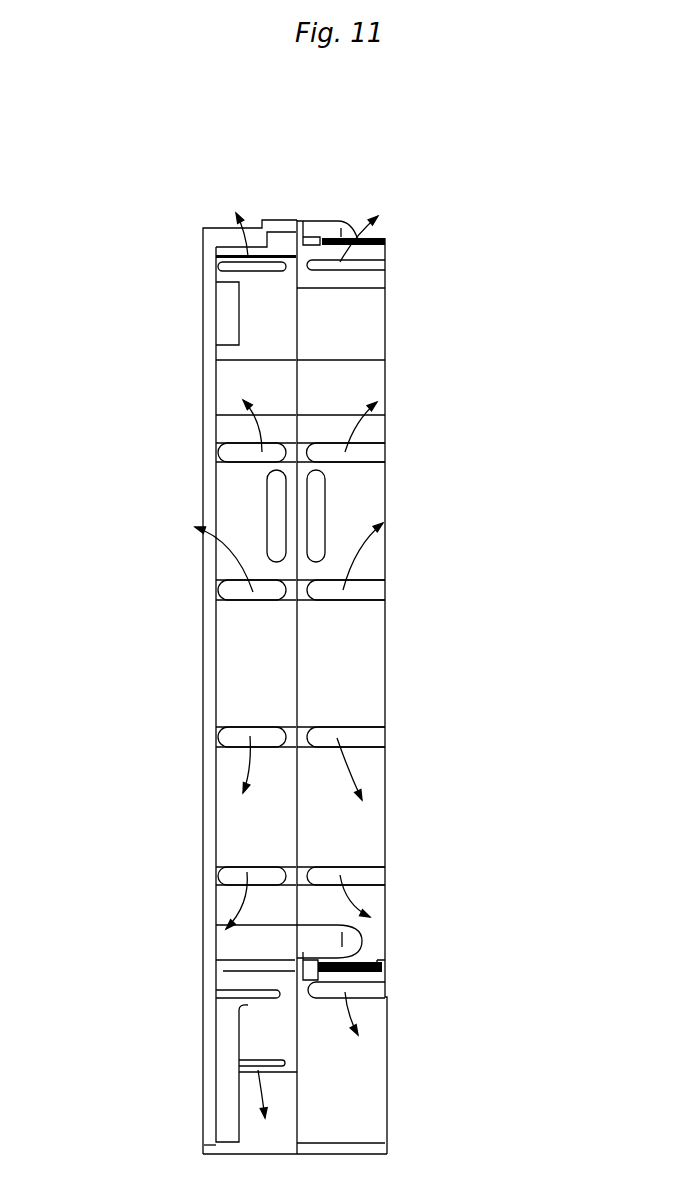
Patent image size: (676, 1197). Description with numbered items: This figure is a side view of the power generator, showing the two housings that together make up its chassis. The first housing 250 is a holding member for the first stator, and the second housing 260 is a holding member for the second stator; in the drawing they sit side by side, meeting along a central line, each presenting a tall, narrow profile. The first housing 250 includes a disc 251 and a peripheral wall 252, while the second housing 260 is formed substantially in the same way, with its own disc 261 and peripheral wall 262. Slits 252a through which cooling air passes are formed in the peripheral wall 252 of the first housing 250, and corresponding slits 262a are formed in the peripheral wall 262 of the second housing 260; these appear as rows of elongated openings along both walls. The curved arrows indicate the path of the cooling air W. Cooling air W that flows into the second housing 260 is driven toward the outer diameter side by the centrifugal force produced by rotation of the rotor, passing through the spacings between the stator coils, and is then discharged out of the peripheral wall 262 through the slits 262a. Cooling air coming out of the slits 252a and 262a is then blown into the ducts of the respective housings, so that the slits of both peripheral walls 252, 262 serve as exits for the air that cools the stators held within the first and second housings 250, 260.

The second housing 260 is at (218, 627).
The first housing 250 is at (429, 627).
The disc 261 is at (205, 643).
The peripheral wall 262 is at (261, 683).
The slits 262a is at (221, 736).
The disc 251 is at (383, 655).
The peripheral wall 252 is at (335, 683).
The slits 252a is at (365, 735).
The cooling air W is at (251, 219).